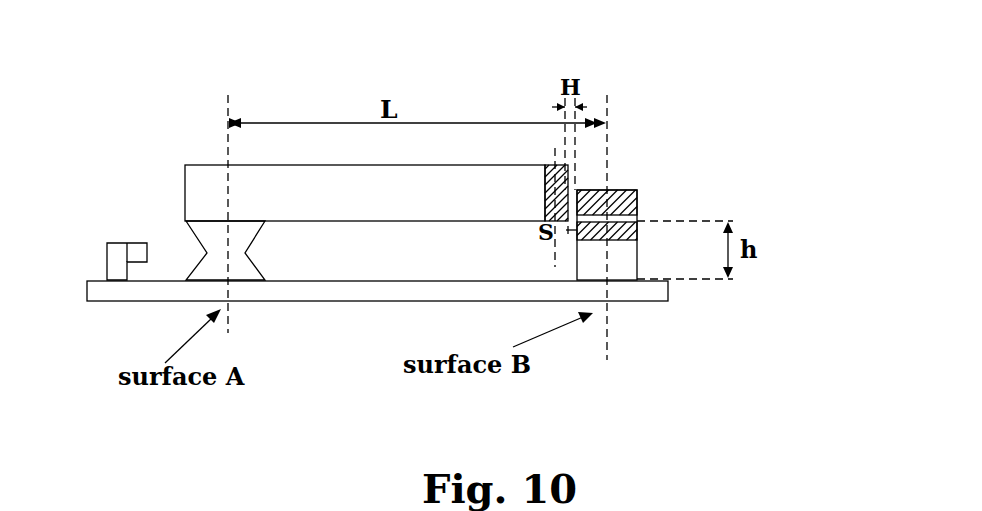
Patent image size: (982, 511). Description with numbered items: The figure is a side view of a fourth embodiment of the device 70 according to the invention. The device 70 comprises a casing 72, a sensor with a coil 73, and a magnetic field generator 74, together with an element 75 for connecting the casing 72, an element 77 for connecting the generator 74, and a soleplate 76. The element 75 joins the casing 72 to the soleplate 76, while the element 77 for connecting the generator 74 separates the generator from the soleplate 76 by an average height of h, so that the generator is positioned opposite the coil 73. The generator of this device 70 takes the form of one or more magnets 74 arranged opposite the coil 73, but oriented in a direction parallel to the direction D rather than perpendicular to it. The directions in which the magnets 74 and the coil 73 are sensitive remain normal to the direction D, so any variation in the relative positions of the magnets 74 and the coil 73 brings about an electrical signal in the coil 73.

The device 70 is at (168, 140).
The casing 72 is at (205, 190).
The coil 73 is at (567, 177).
The magnetic field generator 74 is at (637, 230).
The element for connecting the casing 75 is at (212, 238).
The soleplate 76 is at (407, 292).
The element for connecting the generator 77 is at (618, 260).